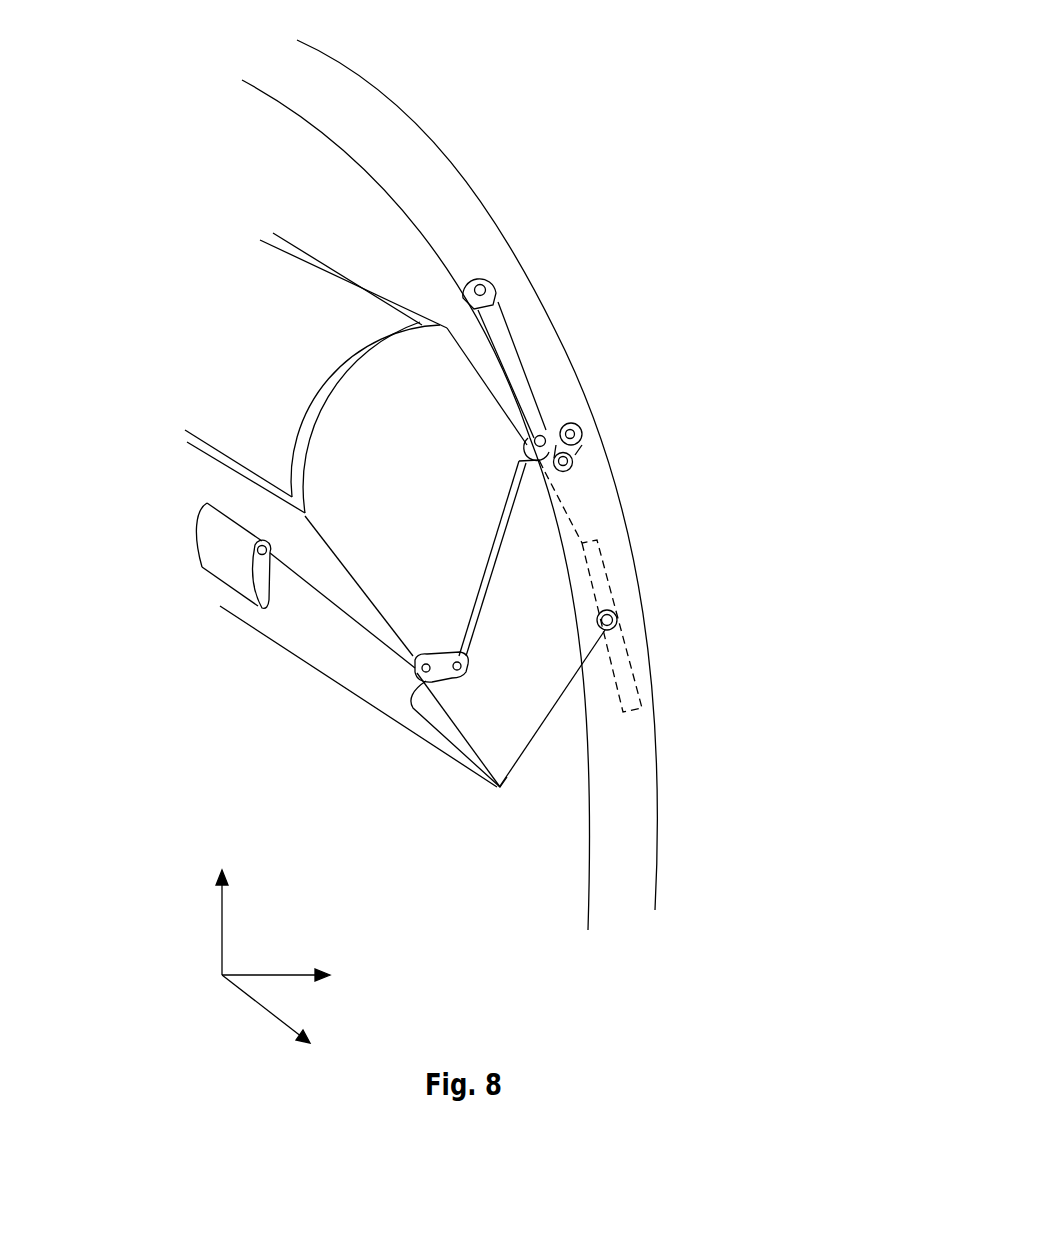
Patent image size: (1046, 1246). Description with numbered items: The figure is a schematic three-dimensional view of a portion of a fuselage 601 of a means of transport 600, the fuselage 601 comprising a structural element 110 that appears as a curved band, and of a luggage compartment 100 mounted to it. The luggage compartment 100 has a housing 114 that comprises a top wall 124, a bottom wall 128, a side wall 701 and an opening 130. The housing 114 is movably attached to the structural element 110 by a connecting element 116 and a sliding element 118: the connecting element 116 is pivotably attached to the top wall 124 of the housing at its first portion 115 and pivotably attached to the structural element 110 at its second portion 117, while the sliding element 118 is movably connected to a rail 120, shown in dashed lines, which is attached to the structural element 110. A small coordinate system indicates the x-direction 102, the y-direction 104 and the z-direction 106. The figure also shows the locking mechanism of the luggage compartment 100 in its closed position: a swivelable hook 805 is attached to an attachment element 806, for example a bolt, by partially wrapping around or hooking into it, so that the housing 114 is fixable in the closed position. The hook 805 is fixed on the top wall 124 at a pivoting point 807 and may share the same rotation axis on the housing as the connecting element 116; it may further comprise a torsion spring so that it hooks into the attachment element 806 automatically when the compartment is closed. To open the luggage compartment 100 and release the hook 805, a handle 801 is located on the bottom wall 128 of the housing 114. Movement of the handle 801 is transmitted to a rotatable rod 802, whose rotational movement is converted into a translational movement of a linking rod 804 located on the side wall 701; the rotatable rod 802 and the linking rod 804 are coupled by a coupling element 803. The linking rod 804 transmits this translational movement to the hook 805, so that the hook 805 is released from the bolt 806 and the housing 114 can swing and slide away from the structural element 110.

The luggage compartment 100 is at (243, 756).
The x-direction 102 is at (260, 1010).
The y-direction 104 is at (293, 973).
The z-direction 106 is at (223, 903).
The structural element 110 is at (443, 193).
The housing 114 is at (548, 714).
The first portion 115 is at (543, 433).
The connecting element 116 is at (512, 352).
The second portion 117 is at (484, 283).
The sliding element 118 is at (614, 612).
The rail 120 is at (635, 657).
The top wall 124 is at (325, 264).
The bottom wall 128 is at (352, 653).
The opening 130 is at (250, 301).
The means of transport 600 is at (603, 118).
The fuselage 601 is at (412, 120).
The side wall 701 is at (503, 717).
The handle 801 is at (225, 553).
The rotatable rod 802 is at (307, 583).
The coupling element 803 is at (443, 757).
The linking rod 804 is at (543, 703).
The swivelable hook 805 is at (582, 460).
The attachment element 806 is at (581, 426).
The pivoting point 807 is at (568, 472).